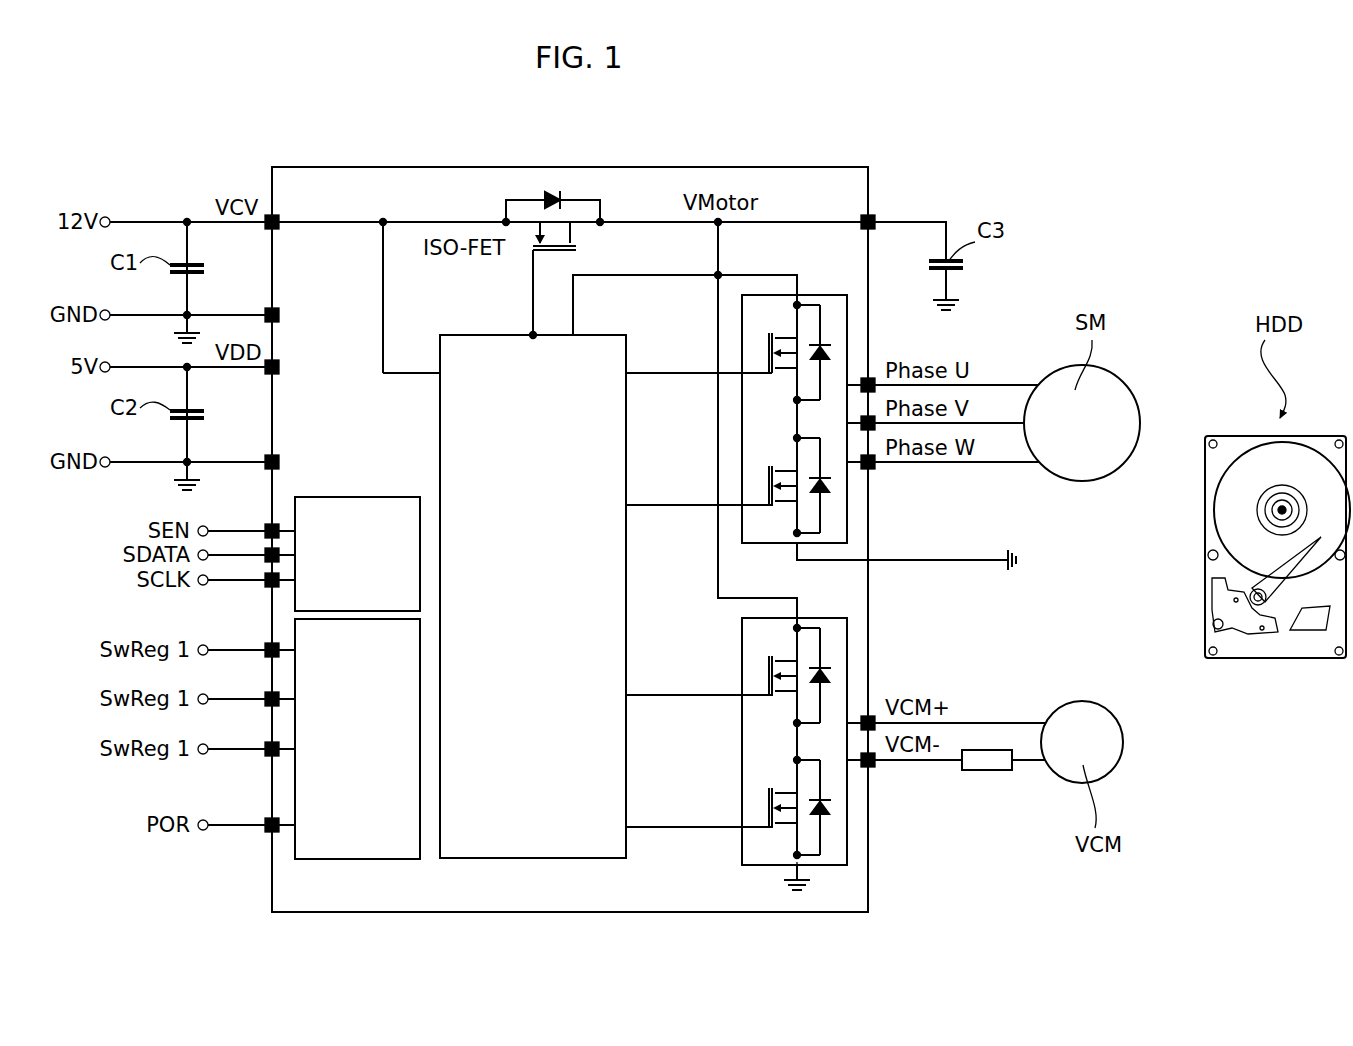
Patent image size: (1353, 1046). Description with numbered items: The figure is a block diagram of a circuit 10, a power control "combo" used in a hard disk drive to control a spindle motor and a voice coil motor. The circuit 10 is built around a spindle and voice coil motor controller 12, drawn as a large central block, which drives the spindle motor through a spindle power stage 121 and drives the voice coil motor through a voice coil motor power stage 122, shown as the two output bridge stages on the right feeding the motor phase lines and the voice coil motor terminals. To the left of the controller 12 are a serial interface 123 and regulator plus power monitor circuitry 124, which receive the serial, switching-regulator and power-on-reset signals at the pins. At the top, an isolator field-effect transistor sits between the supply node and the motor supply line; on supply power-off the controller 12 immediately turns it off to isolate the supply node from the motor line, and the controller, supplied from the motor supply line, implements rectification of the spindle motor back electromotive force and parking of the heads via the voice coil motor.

The circuit 10 is at (903, 140).
The spindle and VCM motor controller 12 is at (562, 850).
The spindle power stage 121 is at (703, 530).
The VCM power stage 122 is at (692, 882).
The serial interface 123 is at (358, 505).
The regulator plus power monitor circuitry 124 is at (356, 848).